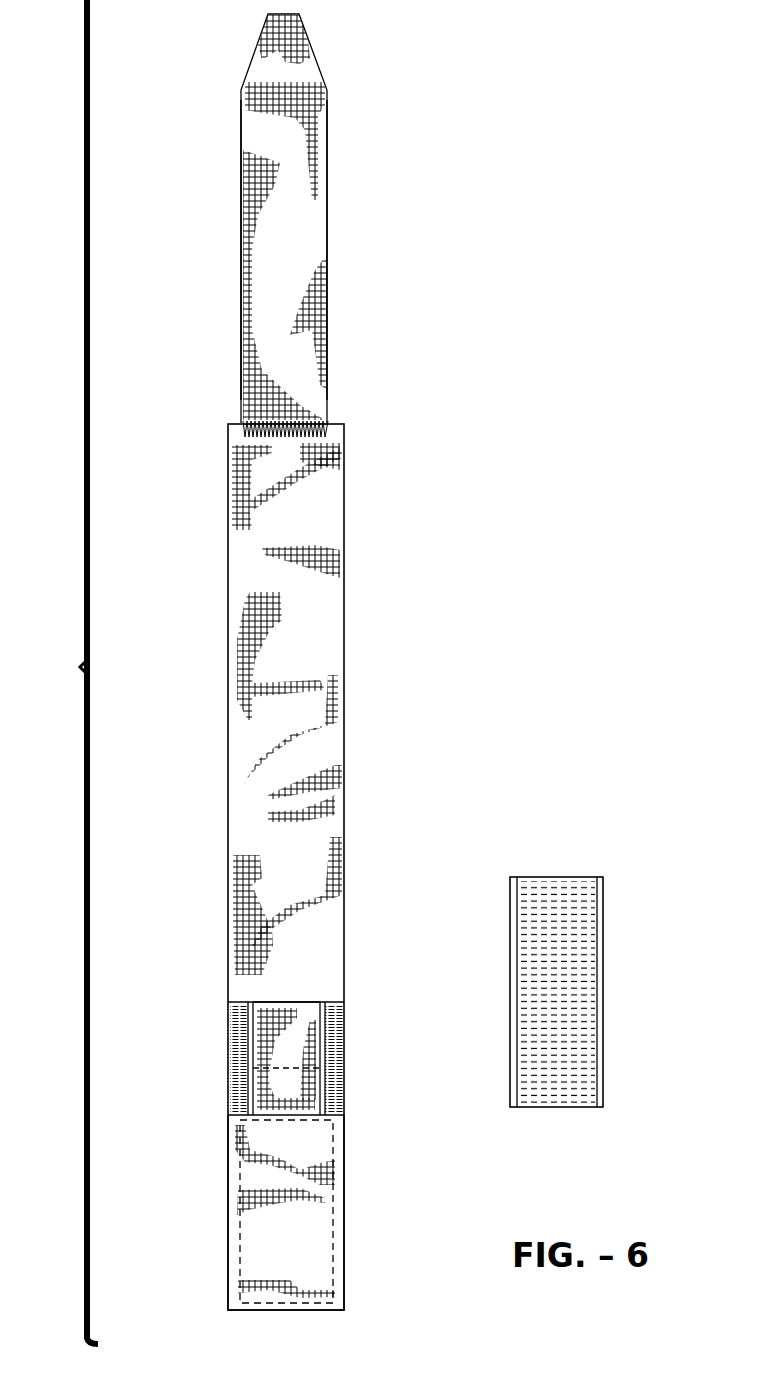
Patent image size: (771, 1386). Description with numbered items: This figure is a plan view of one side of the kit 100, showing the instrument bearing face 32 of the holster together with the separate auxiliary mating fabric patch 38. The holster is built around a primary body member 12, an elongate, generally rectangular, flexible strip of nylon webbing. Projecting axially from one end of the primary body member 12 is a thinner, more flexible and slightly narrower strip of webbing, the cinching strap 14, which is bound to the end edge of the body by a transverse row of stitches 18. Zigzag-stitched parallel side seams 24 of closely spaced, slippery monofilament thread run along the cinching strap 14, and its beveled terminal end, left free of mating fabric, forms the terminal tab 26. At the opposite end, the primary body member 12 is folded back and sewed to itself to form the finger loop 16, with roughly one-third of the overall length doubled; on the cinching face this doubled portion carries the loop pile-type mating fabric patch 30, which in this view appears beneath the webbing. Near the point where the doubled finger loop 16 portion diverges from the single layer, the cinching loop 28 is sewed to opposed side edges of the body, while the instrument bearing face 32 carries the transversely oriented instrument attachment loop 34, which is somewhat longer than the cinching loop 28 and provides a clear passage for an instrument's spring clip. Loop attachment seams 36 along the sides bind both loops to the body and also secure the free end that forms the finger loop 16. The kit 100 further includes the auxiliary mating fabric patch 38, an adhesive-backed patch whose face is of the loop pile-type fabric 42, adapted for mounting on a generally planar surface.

The kit 100 is at (65, 672).
The primary body member 12 is at (294, 876).
The cinching strap 14 is at (280, 218).
The finger loop 16 is at (337, 1221).
The stitches 18 is at (252, 420).
The side seams 24 is at (242, 163).
The terminal tab 26 is at (300, 45).
The cinching loop 28 is at (307, 1008).
The loop pile-type mating fabric patch 30 is at (323, 1248).
The instrument bearing face 32 is at (317, 960).
The instrument attachment loop 34 is at (258, 1005).
The loop attachment seams 36 is at (230, 1040).
The auxiliary mating fabric patch 38 is at (587, 974).
The loop pile-type fabric 42 is at (535, 877).